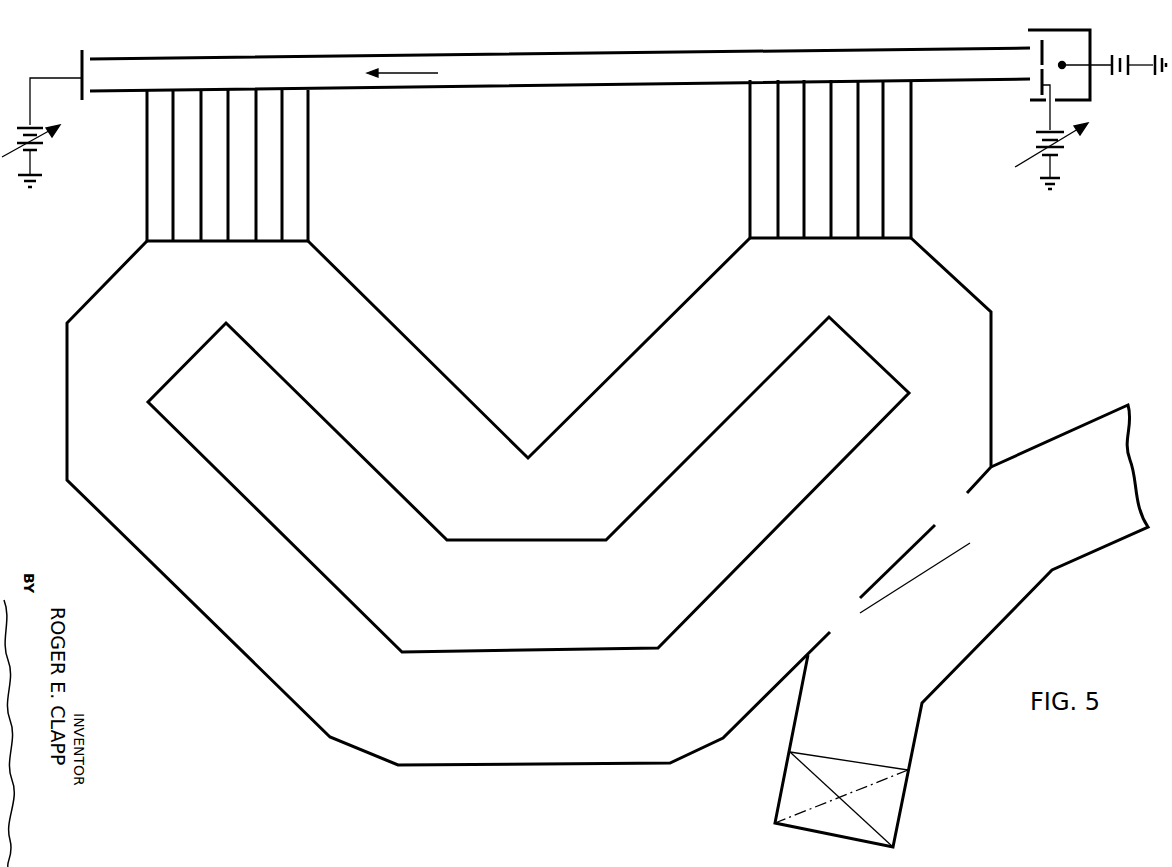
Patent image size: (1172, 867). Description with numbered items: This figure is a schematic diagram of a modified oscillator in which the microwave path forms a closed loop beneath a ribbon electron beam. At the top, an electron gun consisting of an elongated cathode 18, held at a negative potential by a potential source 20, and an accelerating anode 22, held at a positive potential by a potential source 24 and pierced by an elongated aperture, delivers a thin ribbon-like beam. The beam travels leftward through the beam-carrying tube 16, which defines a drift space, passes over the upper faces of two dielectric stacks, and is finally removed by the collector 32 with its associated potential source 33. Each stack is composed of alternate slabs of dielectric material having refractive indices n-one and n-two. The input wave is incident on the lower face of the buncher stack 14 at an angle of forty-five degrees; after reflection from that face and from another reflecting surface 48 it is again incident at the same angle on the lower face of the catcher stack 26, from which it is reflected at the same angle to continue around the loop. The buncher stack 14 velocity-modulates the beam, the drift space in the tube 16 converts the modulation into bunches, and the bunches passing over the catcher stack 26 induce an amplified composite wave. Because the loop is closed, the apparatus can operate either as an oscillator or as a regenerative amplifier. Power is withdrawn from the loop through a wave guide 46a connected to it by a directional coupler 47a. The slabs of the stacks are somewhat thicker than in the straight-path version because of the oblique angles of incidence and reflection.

The buncher stack 14 is at (746, 193).
The beam-carrying tube 16 is at (663, 52).
The cathode 18 is at (1072, 47).
The potential source 20 is at (1128, 82).
The accelerating anode 22 is at (1040, 42).
The potential source 24 is at (1065, 153).
The catcher stack 26 is at (318, 193).
The collector 32 is at (78, 66).
The collector potential source 33 is at (40, 148).
The wave guide 46a is at (1111, 490).
The directional coupler 47a is at (945, 515).
The reflecting surface 48 is at (500, 538).